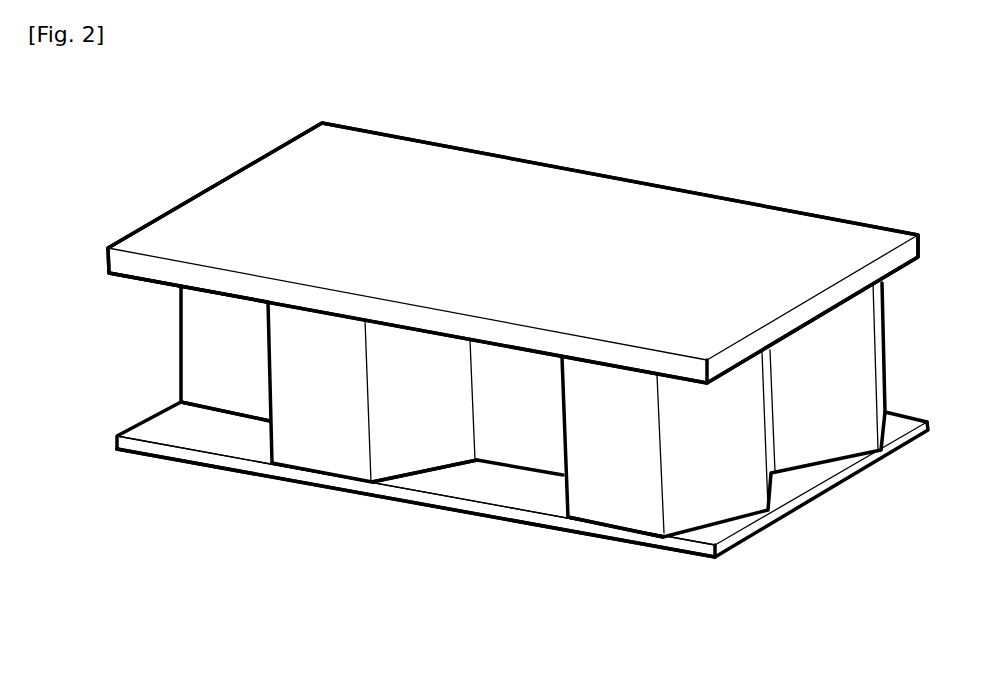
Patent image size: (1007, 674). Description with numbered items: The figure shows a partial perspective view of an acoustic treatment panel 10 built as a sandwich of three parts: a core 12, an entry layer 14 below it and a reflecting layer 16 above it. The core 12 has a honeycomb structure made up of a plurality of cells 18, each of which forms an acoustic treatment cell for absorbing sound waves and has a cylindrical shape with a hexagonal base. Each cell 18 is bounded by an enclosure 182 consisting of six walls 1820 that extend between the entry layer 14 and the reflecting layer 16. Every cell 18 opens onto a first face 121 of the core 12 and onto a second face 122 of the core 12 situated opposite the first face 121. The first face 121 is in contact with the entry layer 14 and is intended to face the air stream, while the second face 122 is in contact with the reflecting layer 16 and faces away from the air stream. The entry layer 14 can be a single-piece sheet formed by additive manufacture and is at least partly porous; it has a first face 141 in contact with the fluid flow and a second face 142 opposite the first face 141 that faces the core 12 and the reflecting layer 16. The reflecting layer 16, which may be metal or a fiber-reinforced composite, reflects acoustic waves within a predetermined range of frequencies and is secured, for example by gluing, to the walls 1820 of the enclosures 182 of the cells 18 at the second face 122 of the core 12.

The acoustic treatment panel 10 is at (828, 155).
The core 12 is at (178, 327).
The first face of the core 121 is at (170, 388).
The second face of the core 122 is at (158, 286).
The entry layer 14 is at (117, 438).
The first face of the entry layer 141 is at (235, 473).
The second face of the entry layer 142 is at (200, 436).
The reflecting layer 16 is at (108, 262).
The cell 18 is at (720, 492).
The enclosure 182 is at (319, 440).
The wall 1820 is at (588, 485).